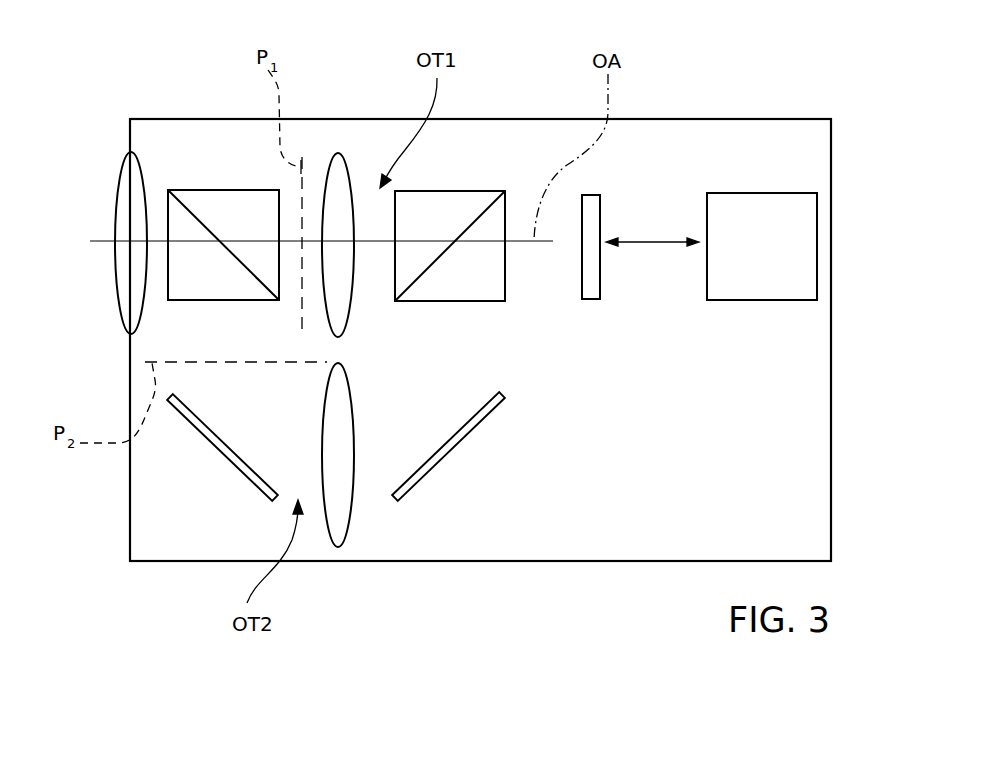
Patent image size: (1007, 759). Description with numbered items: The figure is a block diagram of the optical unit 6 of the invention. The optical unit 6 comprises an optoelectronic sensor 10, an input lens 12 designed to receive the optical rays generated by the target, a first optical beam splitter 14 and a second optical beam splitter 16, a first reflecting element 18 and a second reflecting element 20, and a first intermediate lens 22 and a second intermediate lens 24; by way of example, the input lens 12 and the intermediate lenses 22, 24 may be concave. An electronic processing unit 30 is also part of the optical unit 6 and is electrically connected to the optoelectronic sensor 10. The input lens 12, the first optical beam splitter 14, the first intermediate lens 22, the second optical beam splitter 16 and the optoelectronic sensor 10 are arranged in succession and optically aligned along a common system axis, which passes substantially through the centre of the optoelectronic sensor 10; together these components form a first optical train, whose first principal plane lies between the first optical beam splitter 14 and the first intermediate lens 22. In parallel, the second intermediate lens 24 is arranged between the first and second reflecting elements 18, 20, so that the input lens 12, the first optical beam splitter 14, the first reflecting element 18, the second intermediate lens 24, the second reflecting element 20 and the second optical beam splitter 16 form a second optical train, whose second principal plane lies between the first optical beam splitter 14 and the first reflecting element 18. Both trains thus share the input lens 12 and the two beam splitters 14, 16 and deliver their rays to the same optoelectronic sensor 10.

The optical unit 6 is at (745, 90).
The optoelectronic sensor 10 is at (593, 297).
The input lens 12 is at (129, 200).
The first optical beam splitter 14 is at (213, 204).
The second optical beam splitter 16 is at (462, 201).
The first reflecting element 18 is at (229, 453).
The second reflecting element 20 is at (473, 428).
The first intermediate lens 22 is at (342, 178).
The second intermediate lens 24 is at (338, 397).
The electronic processing unit 30 is at (770, 293).